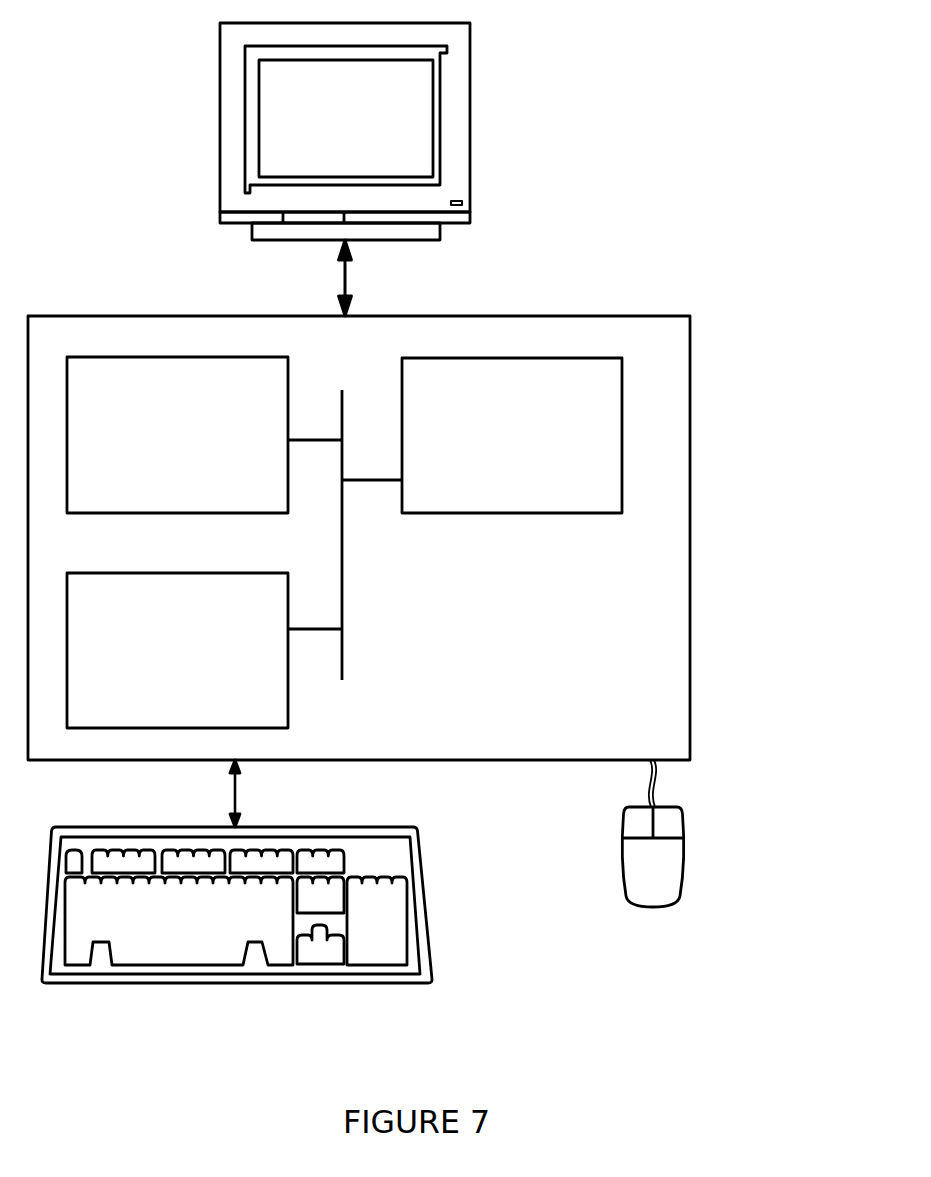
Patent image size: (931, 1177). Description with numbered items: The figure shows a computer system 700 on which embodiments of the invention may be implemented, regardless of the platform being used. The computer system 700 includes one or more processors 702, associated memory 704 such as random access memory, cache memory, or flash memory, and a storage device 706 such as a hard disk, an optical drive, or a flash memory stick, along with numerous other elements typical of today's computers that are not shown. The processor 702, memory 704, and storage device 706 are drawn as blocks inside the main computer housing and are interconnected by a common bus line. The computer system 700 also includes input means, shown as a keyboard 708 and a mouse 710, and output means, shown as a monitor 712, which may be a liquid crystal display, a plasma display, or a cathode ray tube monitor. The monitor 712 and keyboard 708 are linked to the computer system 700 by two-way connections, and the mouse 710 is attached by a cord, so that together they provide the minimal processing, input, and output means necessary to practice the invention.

The computer system 700 is at (702, 178).
The processor 702 is at (197, 446).
The memory 704 is at (193, 662).
The storage device 706 is at (528, 446).
The keyboard 708 is at (213, 932).
The mouse 710 is at (685, 833).
The monitor 712 is at (365, 136).